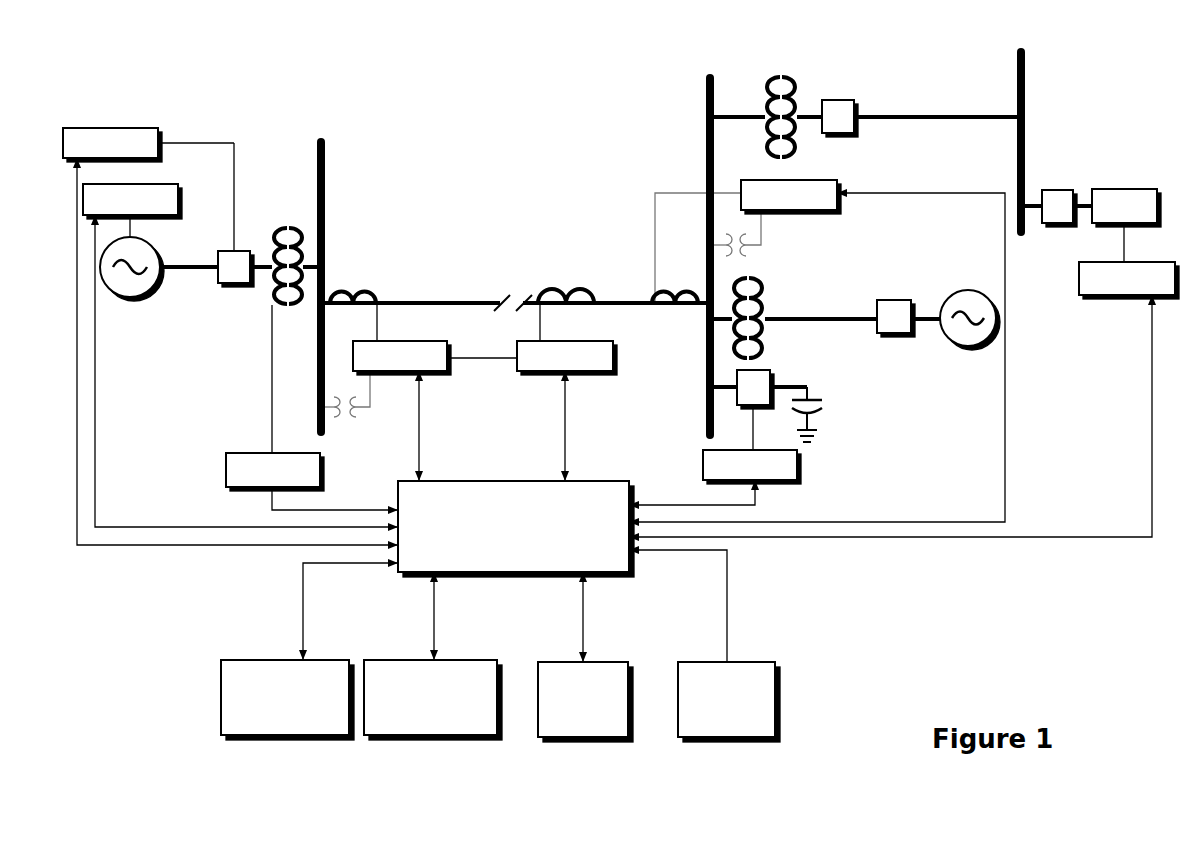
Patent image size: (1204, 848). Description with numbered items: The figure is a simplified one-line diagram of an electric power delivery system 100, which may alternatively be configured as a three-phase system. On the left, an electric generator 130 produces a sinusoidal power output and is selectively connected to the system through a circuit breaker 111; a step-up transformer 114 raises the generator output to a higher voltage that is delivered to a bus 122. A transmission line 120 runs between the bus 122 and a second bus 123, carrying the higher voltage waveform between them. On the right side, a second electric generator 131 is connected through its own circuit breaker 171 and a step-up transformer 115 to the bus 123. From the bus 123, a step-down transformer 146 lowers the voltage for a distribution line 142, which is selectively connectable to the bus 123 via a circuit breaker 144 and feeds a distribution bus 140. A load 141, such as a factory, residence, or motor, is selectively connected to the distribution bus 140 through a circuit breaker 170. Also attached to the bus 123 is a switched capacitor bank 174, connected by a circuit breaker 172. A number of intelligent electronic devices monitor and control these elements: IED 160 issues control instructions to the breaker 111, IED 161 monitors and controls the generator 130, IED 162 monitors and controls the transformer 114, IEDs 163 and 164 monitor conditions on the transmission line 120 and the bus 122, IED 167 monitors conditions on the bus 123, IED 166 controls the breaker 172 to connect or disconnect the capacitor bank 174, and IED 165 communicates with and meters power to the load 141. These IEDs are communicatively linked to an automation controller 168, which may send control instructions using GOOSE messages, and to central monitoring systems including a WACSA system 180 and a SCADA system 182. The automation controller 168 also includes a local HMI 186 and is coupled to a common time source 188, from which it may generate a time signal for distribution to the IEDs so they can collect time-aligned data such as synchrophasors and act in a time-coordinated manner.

The electric power delivery system 100 is at (497, 125).
The circuit breaker 111 is at (230, 285).
The step-up transformer 114 is at (298, 226).
The step-up transformer 115 is at (765, 281).
The transmission line 120 is at (398, 300).
The bus 122 is at (325, 172).
The bus 123 is at (706, 376).
The electric generator 130 is at (152, 246).
The electric generator 131 is at (960, 347).
The distribution bus 140 is at (1025, 127).
The load 141 is at (1127, 189).
The distribution line 142 is at (926, 116).
The circuit breaker 144 is at (836, 99).
The step-down transformer 146 is at (776, 80).
The intelligent electronic device 160 is at (120, 128).
The intelligent electronic device 161 is at (158, 184).
The intelligent electronic device 162 is at (250, 452).
The intelligent electronic device 163 is at (438, 376).
The intelligent electronic device 164 is at (595, 376).
The intelligent electronic device 165 is at (1090, 297).
The intelligent electronic device 166 is at (700, 455).
The intelligent electronic device 167 is at (845, 211).
The automation controller 168 is at (516, 529).
The circuit breaker 170 is at (1062, 190).
The circuit breaker 171 is at (897, 300).
The circuit breaker 172 is at (765, 372).
The switched capacitor bank 174 is at (811, 398).
The wide area control and situational awareness system 180 is at (305, 742).
The supervisory control and data acquisition system 182 is at (410, 742).
The local human machine interface 186 is at (620, 744).
The common time source 188 is at (730, 744).